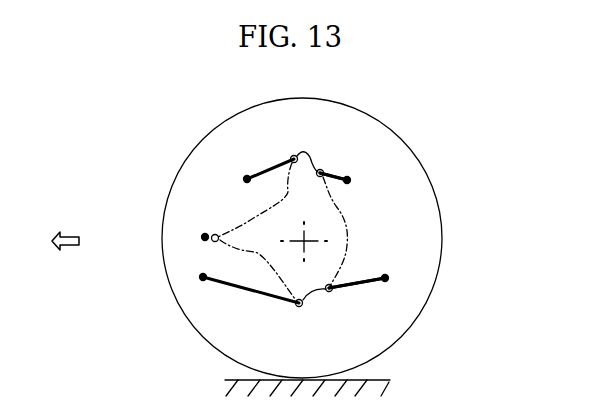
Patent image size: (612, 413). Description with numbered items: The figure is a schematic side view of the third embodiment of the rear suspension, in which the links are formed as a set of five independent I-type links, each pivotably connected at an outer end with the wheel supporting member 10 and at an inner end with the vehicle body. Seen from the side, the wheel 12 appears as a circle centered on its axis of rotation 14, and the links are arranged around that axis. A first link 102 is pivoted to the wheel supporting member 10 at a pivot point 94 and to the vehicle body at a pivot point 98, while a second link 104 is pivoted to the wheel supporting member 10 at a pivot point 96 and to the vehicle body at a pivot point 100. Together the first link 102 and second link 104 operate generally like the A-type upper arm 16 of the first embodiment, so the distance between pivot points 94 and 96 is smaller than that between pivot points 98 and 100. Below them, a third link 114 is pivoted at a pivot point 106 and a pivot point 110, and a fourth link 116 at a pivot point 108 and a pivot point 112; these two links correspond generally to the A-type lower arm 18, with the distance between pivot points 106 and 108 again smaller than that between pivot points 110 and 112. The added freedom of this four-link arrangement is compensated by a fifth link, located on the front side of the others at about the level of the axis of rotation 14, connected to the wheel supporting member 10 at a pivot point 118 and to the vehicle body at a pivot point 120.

The wheel supporting member 10 is at (349, 222).
The wheel 12 is at (442, 220).
The axis of rotation 14 is at (305, 240).
The A-type upper arm 16 is at (350, 169).
The A-type lower arm 18 is at (385, 288).
The pivot point 94 is at (295, 155).
The pivot point 96 is at (321, 169).
The pivot point 98 is at (247, 179).
The pivot point 100 is at (350, 180).
The first link 102 is at (283, 164).
The second link 104 is at (347, 170).
The pivot point 106 is at (297, 307).
The pivot point 108 is at (329, 292).
The pivot point 110 is at (202, 278).
The pivot point 112 is at (412, 265).
The third link 114 is at (243, 290).
The fourth link 116 is at (369, 283).
The pivot point 118 is at (216, 236).
The pivot point 120 is at (203, 238).